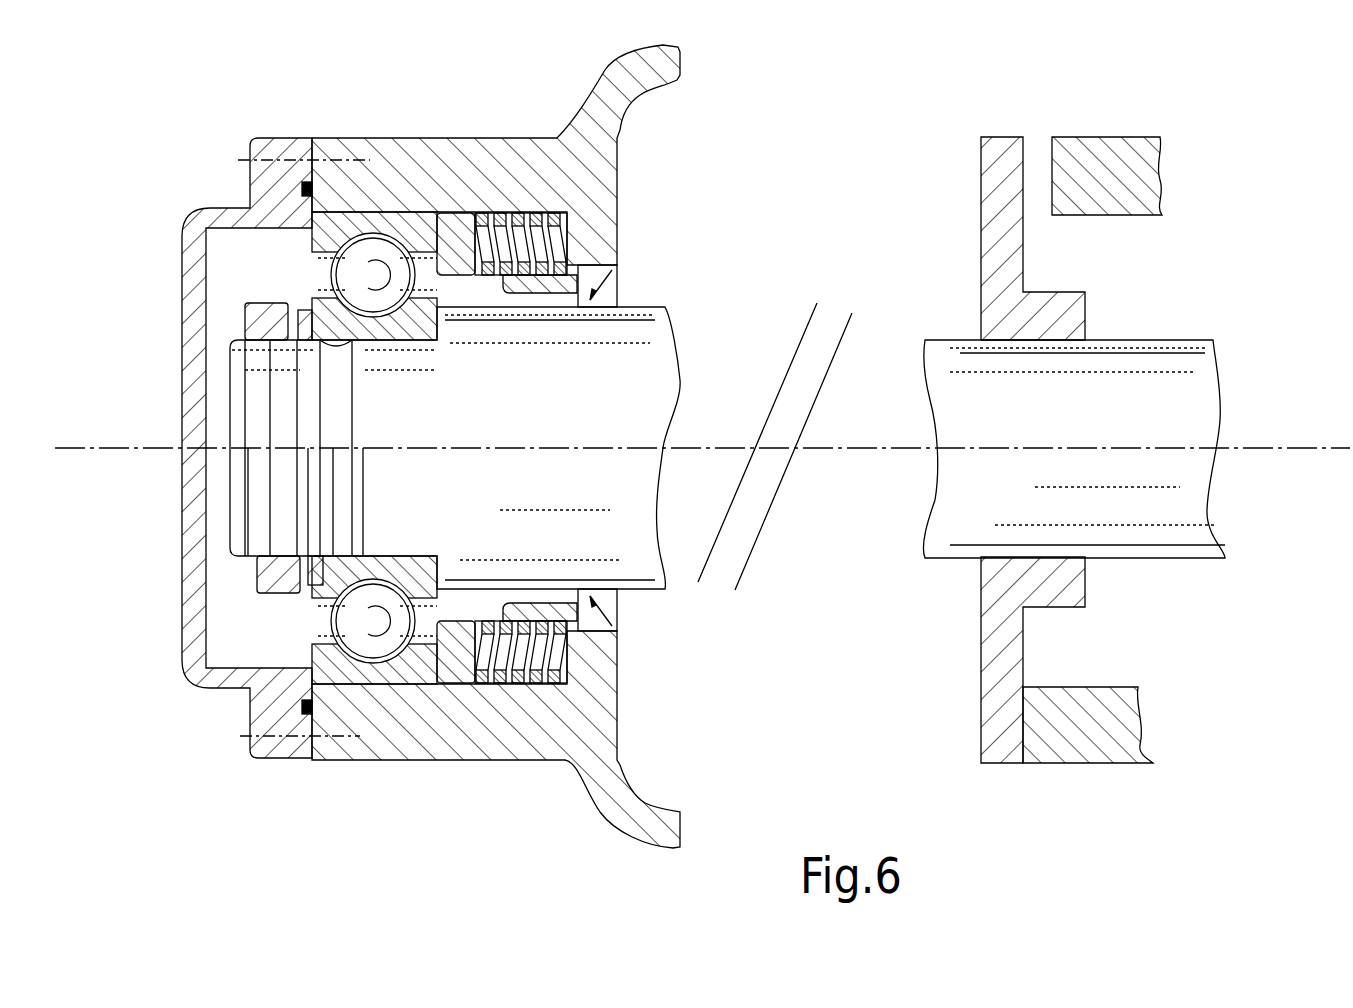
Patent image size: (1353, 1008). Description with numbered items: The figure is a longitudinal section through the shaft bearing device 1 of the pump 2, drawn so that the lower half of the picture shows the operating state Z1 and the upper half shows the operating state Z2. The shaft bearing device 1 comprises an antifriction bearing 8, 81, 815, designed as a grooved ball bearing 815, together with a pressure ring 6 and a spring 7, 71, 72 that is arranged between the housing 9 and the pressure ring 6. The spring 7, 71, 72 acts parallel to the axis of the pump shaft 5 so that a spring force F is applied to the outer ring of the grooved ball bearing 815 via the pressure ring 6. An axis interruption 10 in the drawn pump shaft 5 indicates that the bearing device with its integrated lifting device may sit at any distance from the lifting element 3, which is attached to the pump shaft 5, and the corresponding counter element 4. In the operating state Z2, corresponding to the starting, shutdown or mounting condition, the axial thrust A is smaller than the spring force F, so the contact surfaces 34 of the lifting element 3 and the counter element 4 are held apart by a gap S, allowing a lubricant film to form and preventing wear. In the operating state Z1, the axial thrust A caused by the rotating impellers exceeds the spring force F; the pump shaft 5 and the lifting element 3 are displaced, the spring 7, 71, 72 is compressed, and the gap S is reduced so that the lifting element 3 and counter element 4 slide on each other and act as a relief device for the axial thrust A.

The shaft bearing device 1 is at (530, 105).
The pump 2 is at (1226, 83).
The lifting element 3 is at (1000, 200).
The counter element 4 is at (1105, 160).
The pump shaft 5 is at (1135, 400).
The pressure ring 6 is at (465, 210).
The spring 7 is at (587, 442).
The spring 71 is at (543, 253).
The spring 72 is at (507, 448).
The antifriction bearing 8 is at (196, 448).
The antifriction bearing 81 is at (247, 448).
The grooved ball bearing 815 is at (302, 262).
The housing 9 is at (563, 190).
The axis interruption 10 is at (541, 467).
The contact surfaces 34 is at (1023, 720).
The gap S is at (1052, 128).
The axial thrust A is at (1345, 393).
The spring force F is at (1343, 500).
The operating state Z1 is at (147, 561).
The operating state Z2 is at (147, 327).